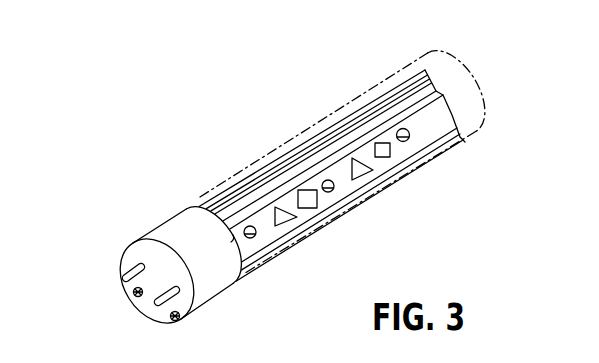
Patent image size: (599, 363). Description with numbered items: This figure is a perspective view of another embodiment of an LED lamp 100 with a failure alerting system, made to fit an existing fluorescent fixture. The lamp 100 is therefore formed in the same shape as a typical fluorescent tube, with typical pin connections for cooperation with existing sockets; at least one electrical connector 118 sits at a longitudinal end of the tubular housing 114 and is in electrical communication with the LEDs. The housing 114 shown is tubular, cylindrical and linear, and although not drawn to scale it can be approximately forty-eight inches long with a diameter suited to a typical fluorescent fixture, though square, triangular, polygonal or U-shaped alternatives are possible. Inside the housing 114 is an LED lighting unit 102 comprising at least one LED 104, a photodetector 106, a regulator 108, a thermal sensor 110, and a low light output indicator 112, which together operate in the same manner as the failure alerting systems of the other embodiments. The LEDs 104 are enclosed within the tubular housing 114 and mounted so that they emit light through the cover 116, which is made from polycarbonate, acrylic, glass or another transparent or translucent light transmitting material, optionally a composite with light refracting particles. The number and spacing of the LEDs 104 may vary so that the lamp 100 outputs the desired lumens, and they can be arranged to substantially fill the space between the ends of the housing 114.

The LED lamp 100 is at (176, 140).
The LED lighting unit 102 is at (366, 90).
The LED 104 is at (410, 135).
The photodetector 106 is at (386, 157).
The regulator 108 is at (282, 217).
The thermal sensor 110 is at (307, 208).
The low light output indicator 112 is at (360, 162).
The housing 114 is at (258, 187).
The cover 116 is at (474, 74).
The electrical connector 118 is at (132, 252).